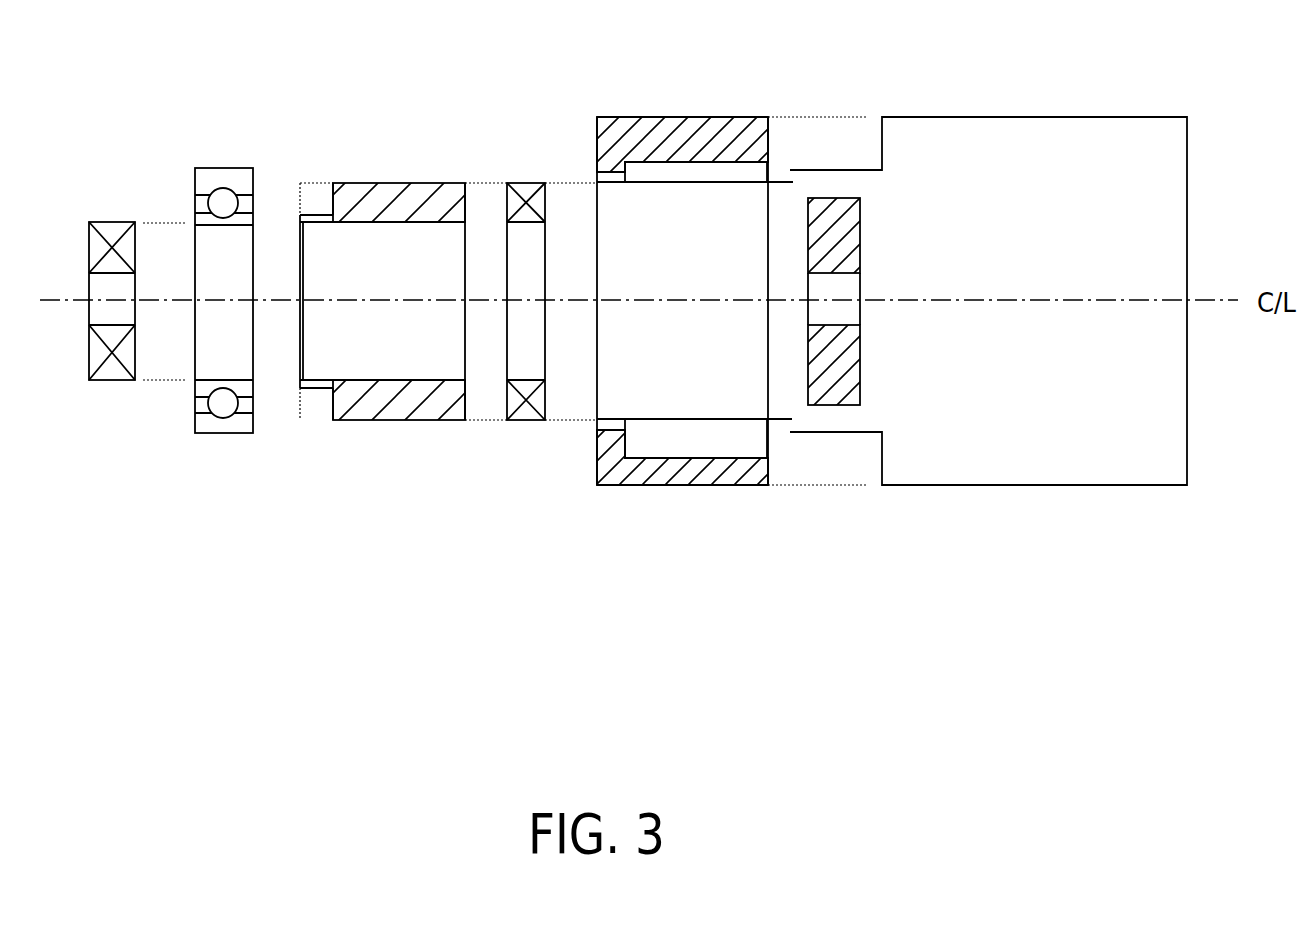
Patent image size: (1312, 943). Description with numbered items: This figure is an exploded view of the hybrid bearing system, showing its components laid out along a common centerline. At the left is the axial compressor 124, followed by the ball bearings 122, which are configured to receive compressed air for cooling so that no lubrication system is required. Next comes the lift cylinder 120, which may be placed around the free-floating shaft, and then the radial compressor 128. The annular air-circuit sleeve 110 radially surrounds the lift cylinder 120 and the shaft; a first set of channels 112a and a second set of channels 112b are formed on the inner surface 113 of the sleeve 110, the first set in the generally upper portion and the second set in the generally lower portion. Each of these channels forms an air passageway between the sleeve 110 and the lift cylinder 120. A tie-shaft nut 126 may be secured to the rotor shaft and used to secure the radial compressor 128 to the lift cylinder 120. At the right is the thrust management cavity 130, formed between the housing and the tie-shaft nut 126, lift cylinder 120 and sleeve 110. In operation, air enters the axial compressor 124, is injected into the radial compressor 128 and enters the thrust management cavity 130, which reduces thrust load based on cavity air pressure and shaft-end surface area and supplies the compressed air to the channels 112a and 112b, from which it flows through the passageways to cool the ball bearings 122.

The annular air-circuit sleeve 110 is at (717, 296).
The first set of channels 112a is at (691, 172).
The second set of channels 112b is at (713, 442).
The inner surface 113 is at (662, 422).
The lift cylinder 120 is at (343, 432).
The ball bearings 122 is at (223, 178).
The axial compressor 124 is at (118, 388).
The tie-shaft nut 126 is at (868, 373).
The radial compressor 128 is at (523, 430).
The thrust management cavity 130 is at (1144, 491).